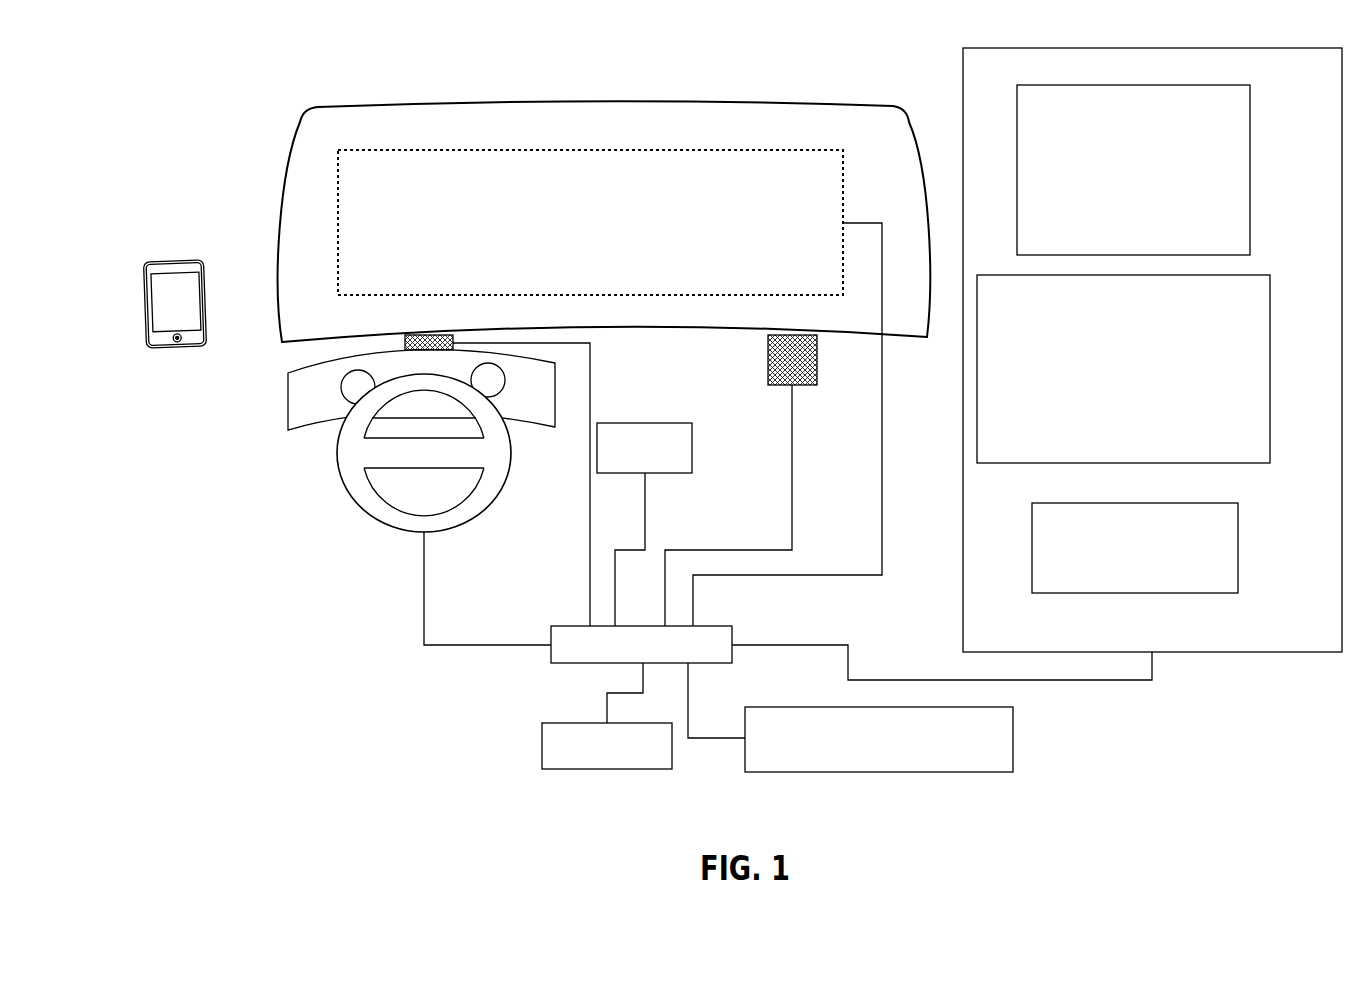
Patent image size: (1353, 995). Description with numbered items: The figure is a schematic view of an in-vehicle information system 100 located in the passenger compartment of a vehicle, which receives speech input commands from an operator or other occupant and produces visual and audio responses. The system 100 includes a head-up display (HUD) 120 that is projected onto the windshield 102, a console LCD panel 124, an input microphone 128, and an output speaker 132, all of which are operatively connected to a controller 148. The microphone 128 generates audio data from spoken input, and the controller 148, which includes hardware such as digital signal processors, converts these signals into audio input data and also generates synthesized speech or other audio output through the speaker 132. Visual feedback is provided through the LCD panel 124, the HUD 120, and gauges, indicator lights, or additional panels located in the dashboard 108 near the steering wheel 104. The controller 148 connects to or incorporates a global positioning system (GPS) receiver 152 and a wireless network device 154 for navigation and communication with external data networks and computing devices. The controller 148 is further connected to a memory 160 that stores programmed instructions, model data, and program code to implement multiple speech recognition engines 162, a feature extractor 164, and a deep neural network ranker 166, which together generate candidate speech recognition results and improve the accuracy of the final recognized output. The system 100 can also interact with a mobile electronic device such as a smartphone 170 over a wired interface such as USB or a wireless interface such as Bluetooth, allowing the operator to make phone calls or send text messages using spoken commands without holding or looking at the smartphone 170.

The in-vehicle information system 100 is at (192, 186).
The windshield 102 is at (285, 193).
The steering wheel 104 is at (352, 498).
The dashboard 108 is at (288, 415).
The head-up display (HUD) 120 is at (628, 150).
The console LCD panel 124 is at (670, 423).
The input microphone 128 is at (403, 337).
The output speaker 132 is at (797, 387).
The controller 148 is at (708, 626).
The global positioning system (GPS) receiver 152 is at (542, 752).
The wireless network device 154 is at (803, 772).
The memory 160 is at (1237, 48).
The multiple speech recognition engines 162 is at (1250, 138).
The feature extractor 164 is at (1272, 330).
The deep neural network ranker 166 is at (1238, 540).
The smartphone 170 is at (145, 307).